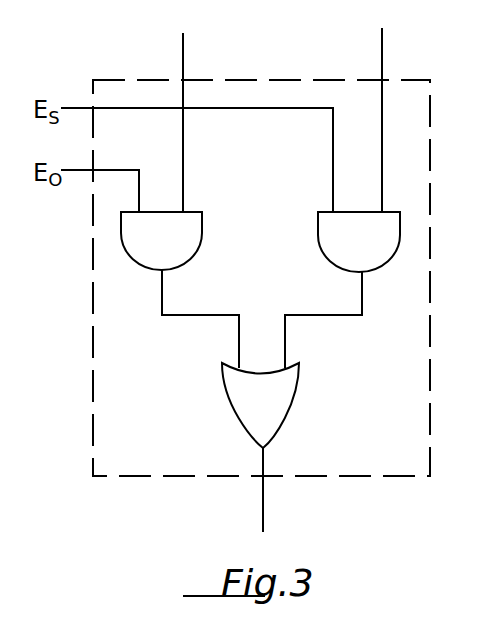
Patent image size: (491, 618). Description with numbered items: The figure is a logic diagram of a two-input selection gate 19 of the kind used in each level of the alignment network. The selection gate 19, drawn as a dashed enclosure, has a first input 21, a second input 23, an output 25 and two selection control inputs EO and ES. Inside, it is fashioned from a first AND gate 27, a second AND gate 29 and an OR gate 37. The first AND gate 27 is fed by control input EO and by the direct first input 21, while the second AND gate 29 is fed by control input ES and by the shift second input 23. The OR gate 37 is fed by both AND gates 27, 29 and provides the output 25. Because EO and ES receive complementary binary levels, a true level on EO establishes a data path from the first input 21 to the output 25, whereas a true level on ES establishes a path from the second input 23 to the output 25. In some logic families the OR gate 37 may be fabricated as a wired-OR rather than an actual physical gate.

The two-input selection gate 19 is at (430, 100).
The first input 21 is at (183, 45).
The second input 23 is at (382, 47).
The output 25 is at (264, 511).
The first AND gate 27 is at (194, 229).
The second AND gate 29 is at (334, 247).
The OR gate 37 is at (287, 408).